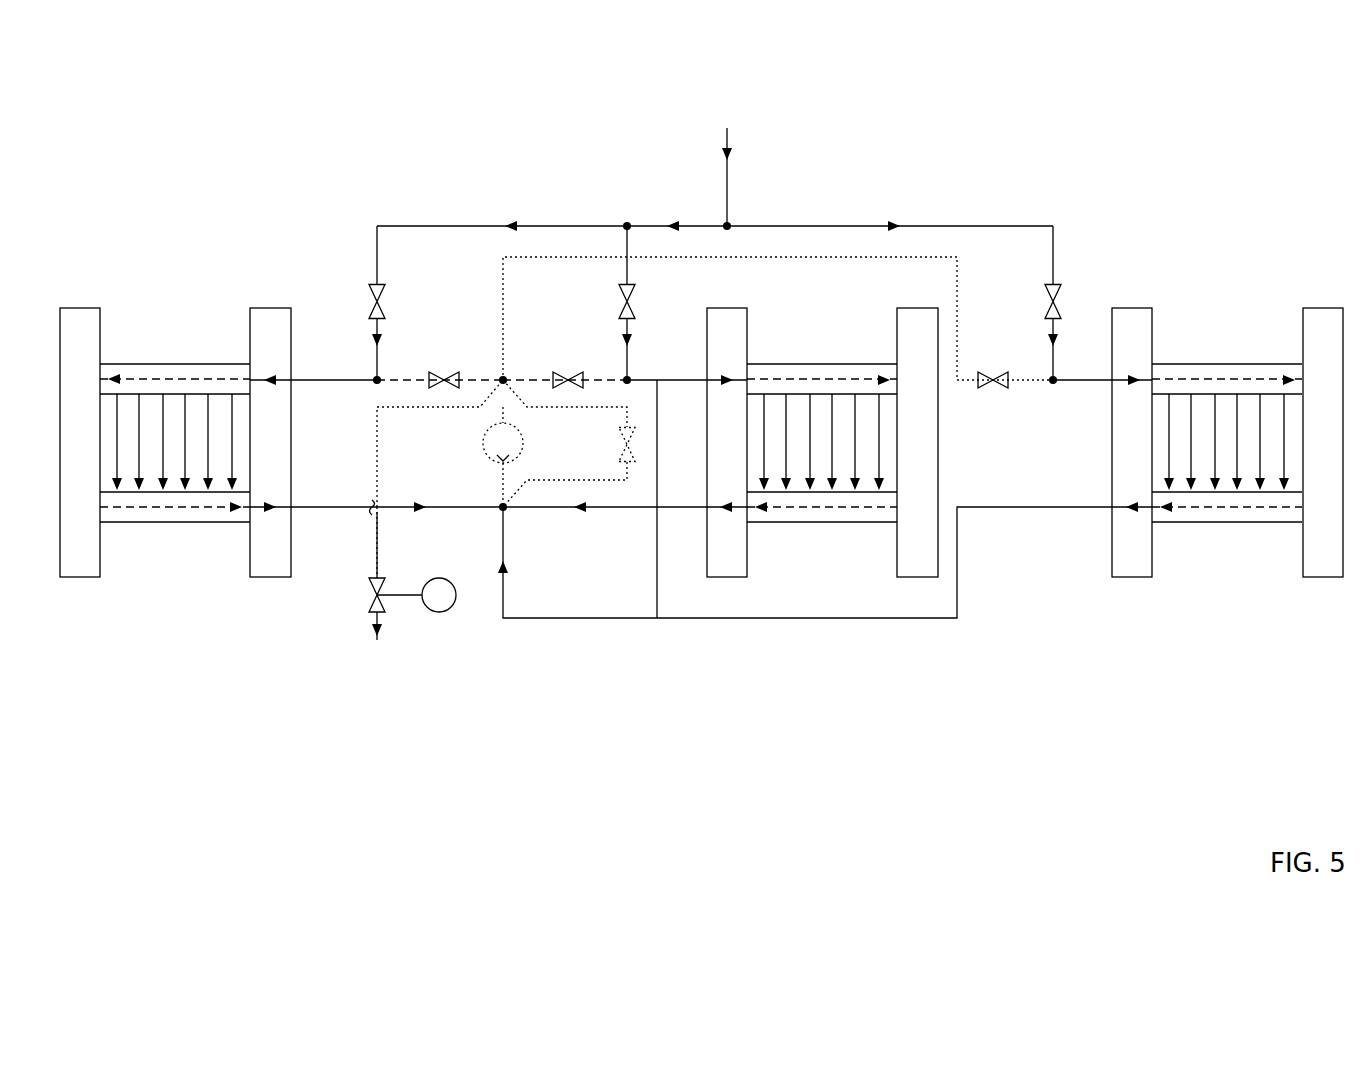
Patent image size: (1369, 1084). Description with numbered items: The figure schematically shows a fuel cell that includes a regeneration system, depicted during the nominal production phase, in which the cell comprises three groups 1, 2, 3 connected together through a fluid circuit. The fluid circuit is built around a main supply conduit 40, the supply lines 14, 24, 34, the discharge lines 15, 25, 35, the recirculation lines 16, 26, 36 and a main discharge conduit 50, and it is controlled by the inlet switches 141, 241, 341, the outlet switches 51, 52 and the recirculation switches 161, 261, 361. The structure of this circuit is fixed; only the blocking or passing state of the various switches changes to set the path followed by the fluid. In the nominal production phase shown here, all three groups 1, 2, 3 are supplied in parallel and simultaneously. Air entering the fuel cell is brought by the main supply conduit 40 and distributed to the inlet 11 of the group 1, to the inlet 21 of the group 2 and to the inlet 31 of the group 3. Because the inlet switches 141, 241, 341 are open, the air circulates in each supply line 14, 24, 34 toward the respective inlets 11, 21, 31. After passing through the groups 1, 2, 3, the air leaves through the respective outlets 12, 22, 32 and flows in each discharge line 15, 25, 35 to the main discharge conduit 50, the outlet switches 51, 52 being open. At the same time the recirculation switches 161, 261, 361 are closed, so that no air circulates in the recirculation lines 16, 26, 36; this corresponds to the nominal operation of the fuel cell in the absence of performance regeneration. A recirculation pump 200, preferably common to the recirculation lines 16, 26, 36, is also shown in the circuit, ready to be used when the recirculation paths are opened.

The group 1 is at (74, 312).
The inlet 11 is at (296, 352).
The outlet 12 is at (297, 527).
The supply line 14 is at (327, 377).
The inlet switch 141 is at (372, 292).
The discharge line 15 is at (330, 509).
The recirculation line 16 is at (478, 377).
The recirculation switch 161 is at (437, 377).
The group 2 is at (918, 537).
The inlet 21 is at (706, 378).
The outlet 22 is at (705, 510).
The supply line 24 is at (650, 430).
The inlet switch 241 is at (622, 287).
The discharge line 25 is at (598, 509).
The recirculation line 26 is at (532, 375).
The recirculation switch 261 is at (557, 373).
The group 3 is at (1327, 540).
The inlet 31 is at (1105, 382).
The outlet 32 is at (1107, 510).
The supply line 34 is at (1083, 375).
The inlet switch 341 is at (1047, 288).
The discharge line 35 is at (1010, 510).
The recirculation line 36 is at (835, 257).
The recirculation switch 361 is at (978, 377).
The main supply conduit 40 is at (730, 197).
The main discharge conduit 50 is at (377, 542).
The outlet switch 51 is at (617, 430).
The outlet switch 52 is at (383, 600).
The recirculation pump 200 is at (485, 458).